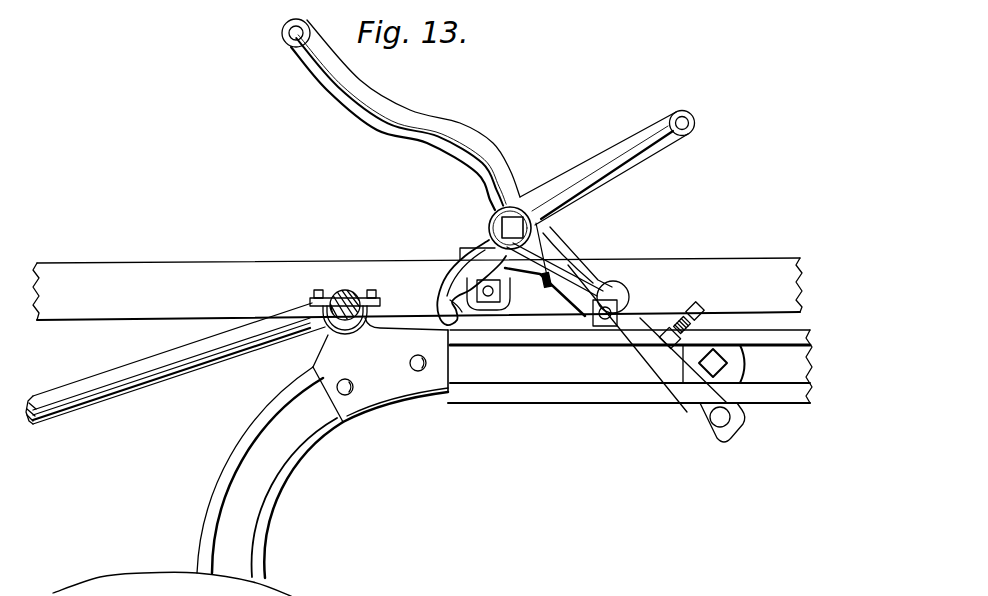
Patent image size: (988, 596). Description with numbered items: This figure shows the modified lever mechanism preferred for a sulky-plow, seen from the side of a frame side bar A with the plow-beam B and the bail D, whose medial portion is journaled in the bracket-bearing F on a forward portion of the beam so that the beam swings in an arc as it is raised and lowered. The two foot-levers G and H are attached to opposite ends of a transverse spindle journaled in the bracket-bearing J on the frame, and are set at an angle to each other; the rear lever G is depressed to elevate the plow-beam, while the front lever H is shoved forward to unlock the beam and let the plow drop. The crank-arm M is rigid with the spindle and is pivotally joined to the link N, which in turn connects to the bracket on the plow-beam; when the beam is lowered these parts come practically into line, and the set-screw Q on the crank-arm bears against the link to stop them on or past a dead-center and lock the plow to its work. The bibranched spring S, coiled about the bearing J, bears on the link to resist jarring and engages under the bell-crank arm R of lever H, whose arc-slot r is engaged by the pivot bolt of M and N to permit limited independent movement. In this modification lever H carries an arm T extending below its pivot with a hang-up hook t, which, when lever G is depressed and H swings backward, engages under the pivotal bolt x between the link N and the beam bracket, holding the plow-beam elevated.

The side bars of the frame A is at (126, 261).
The plow-beam B is at (432, 457).
The bail D is at (56, 403).
The bracket-bearing F is at (347, 288).
The foot-lever G is at (325, 97).
The foot-lever H is at (638, 131).
The arm T is at (450, 273).
The hang-up hook t is at (453, 308).
The bracket-bearing J is at (510, 297).
The bibranched spring S is at (537, 315).
The bell-crank arm R is at (583, 261).
The crank-arm M is at (572, 245).
The arc-slot r is at (627, 284).
The set-screw Q is at (700, 306).
The link N is at (688, 410).
The pivotal bolt or bearing x is at (707, 427).